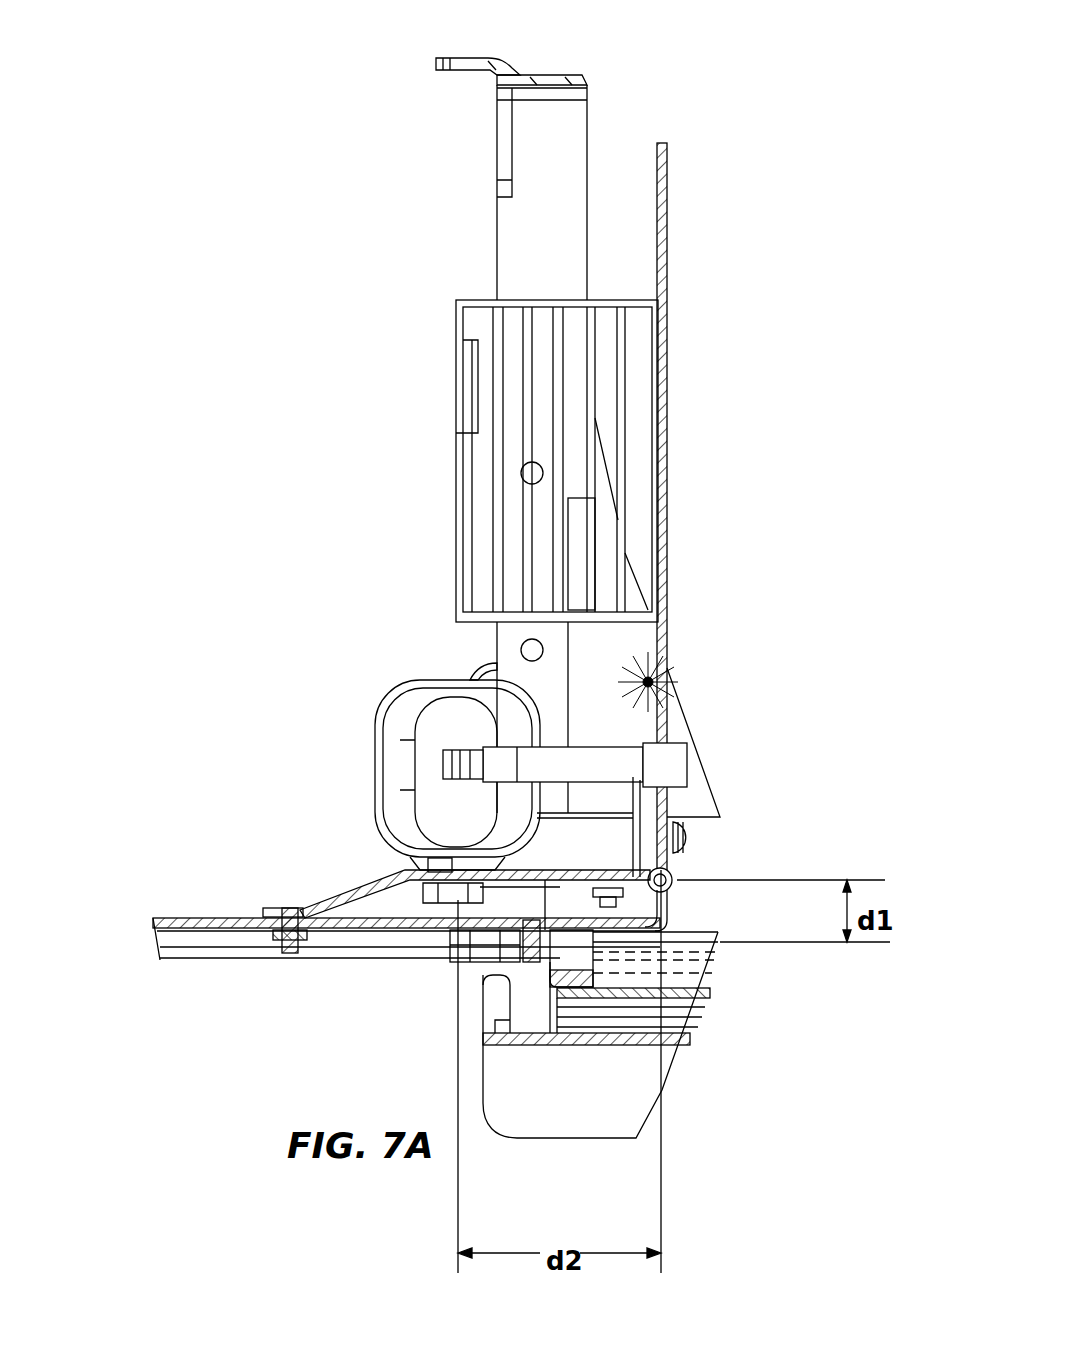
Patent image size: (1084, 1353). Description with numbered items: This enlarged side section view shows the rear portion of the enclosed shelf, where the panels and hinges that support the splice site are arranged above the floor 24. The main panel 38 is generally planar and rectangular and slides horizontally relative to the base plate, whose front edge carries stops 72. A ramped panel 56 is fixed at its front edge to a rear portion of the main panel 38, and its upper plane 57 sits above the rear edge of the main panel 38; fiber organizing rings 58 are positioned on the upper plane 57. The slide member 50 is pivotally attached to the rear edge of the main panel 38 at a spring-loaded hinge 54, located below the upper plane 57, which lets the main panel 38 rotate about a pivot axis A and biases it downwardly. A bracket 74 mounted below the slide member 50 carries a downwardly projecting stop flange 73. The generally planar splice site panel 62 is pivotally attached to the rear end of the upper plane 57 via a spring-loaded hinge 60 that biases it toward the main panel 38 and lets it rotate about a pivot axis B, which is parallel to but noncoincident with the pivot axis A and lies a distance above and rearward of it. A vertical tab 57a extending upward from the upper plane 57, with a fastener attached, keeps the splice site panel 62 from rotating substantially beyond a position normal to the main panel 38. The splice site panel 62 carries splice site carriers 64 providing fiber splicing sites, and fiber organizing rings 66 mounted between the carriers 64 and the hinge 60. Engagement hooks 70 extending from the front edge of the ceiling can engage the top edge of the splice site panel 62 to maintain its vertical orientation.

The engagement hook 70 is at (470, 58).
The splice site panel 62 is at (667, 212).
The splice site carrier 64 is at (465, 488).
The fiber organizing ring 66 is at (547, 757).
The fiber organizing ring 58 is at (395, 765).
The vertical tab 57a is at (640, 826).
The pivot axis B is at (668, 878).
The hinge 60 is at (667, 888).
The slide member 50 is at (612, 938).
The bracket 74 is at (600, 948).
The stop flange 73 is at (577, 977).
The floor 24 is at (650, 1042).
The ramped panel 56 is at (322, 910).
The hinge 54 is at (403, 935).
The pivot axis A is at (447, 940).
The main panel 38 is at (193, 927).
The upper plane 57 is at (587, 870).
The stop 72 is at (573, 910).